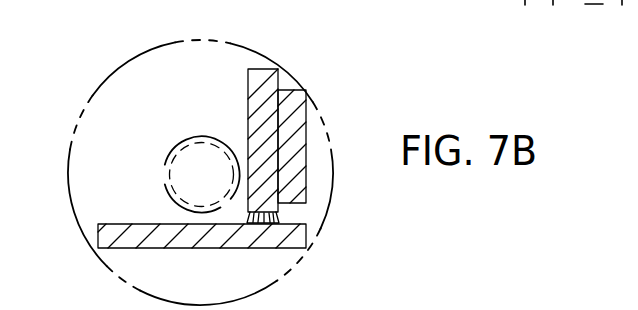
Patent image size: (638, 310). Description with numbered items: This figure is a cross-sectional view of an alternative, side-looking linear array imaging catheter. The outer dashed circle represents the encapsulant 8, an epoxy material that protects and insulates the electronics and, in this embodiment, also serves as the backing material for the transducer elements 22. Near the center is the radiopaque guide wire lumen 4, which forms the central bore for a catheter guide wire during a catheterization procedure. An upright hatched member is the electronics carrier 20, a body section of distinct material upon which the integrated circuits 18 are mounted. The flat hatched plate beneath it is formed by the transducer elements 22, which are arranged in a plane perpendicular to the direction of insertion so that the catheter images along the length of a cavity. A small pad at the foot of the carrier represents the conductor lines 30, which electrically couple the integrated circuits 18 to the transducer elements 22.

The radiopaque guide wire lumen 4 is at (165, 193).
The encapsulant 8 is at (140, 68).
The integrated circuits 18 is at (298, 104).
The electronics carrier 20 is at (268, 69).
The transducer elements 22 is at (289, 242).
The conductor lines 30 is at (282, 221).